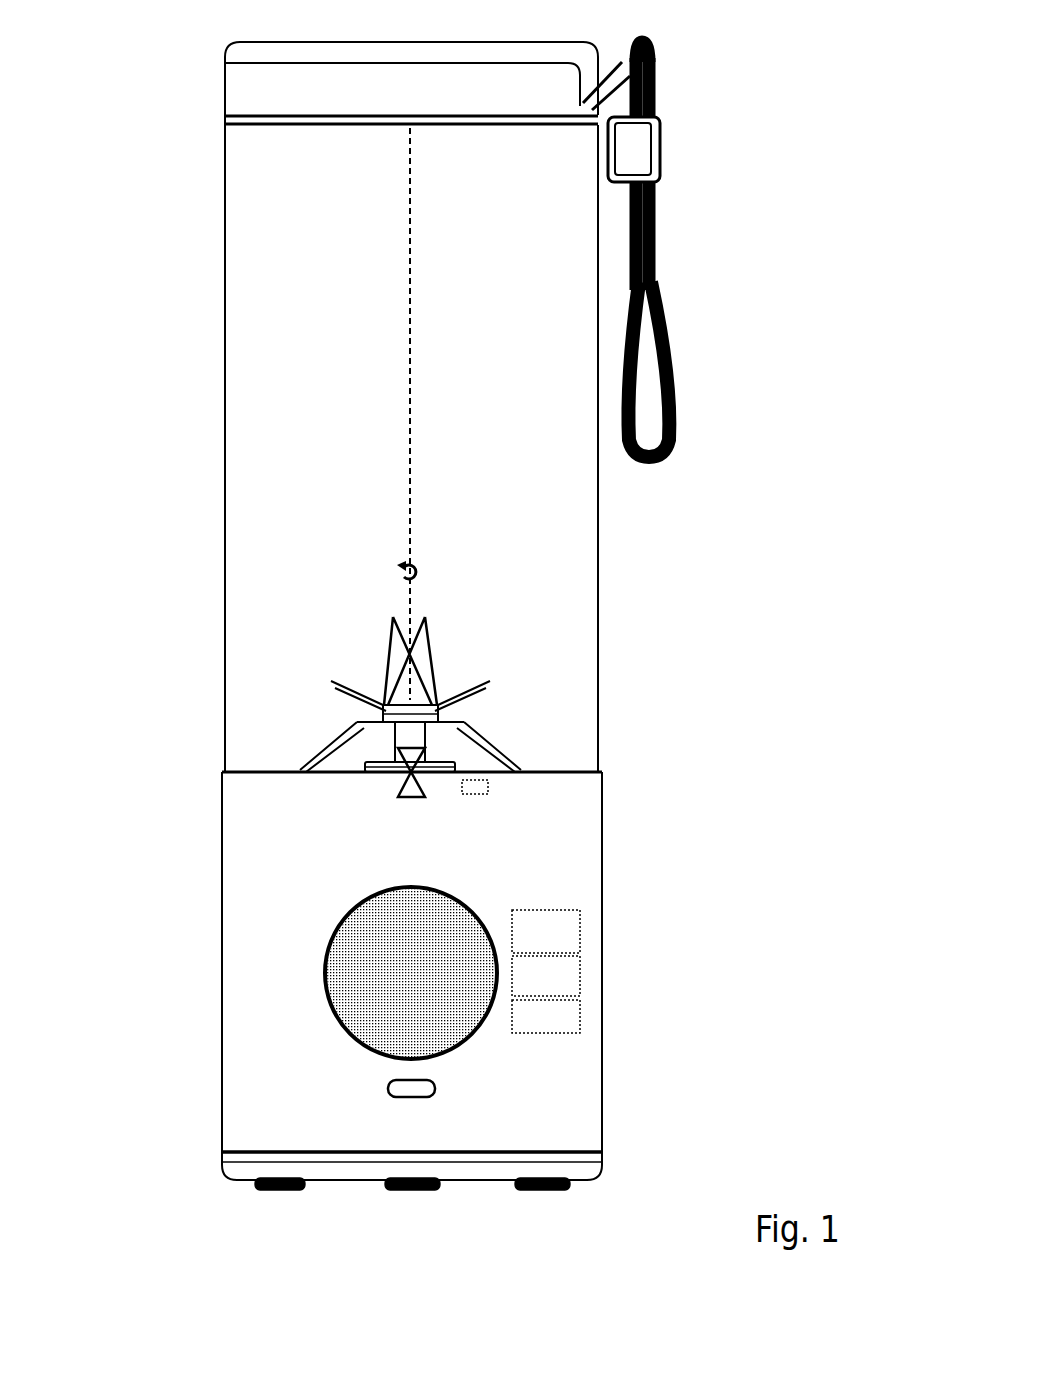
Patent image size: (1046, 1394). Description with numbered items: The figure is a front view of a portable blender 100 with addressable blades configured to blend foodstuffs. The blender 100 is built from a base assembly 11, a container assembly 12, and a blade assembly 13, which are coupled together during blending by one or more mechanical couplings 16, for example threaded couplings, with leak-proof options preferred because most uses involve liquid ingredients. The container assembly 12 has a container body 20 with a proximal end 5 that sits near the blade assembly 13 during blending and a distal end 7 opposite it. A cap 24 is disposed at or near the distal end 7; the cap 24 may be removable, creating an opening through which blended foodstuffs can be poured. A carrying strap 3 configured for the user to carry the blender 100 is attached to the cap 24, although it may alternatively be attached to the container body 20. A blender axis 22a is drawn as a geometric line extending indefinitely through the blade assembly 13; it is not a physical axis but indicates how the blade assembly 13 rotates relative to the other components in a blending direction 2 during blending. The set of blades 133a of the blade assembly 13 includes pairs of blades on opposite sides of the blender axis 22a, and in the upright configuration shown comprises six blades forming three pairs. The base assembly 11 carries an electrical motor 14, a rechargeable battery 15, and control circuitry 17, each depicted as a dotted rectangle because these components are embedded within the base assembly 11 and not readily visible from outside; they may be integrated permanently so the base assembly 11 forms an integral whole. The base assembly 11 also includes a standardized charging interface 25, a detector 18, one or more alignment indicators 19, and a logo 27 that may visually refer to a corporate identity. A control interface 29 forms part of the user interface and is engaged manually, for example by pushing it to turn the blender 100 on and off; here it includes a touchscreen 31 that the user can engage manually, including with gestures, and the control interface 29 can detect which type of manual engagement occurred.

The blender 100 is at (764, 58).
The container assembly 12 is at (216, 47).
The cap 24 is at (447, 37).
The distal end 7 is at (575, 215).
The carrying strap 3 is at (822, 468).
The container body 20 is at (795, 501).
The blender axis 22a is at (414, 540).
The blending direction 2 is at (420, 573).
The set of blades 133a is at (470, 684).
The proximal end 5 is at (612, 742).
The blade assembly 13 is at (291, 583).
The mechanical couplings 16 is at (865, 785).
The detector 18 is at (489, 787).
The alignment indicators 19 is at (422, 800).
The logo 27 is at (500, 874).
The electrical motor 14 is at (825, 935).
The control circuitry 17 is at (826, 978).
The rechargeable battery 15 is at (876, 1023).
The control interface 29 is at (470, 1038).
The touchscreen 31 is at (423, 1033).
The standardized charging interface 25 is at (437, 1088).
The base assembly 11 is at (212, 1193).